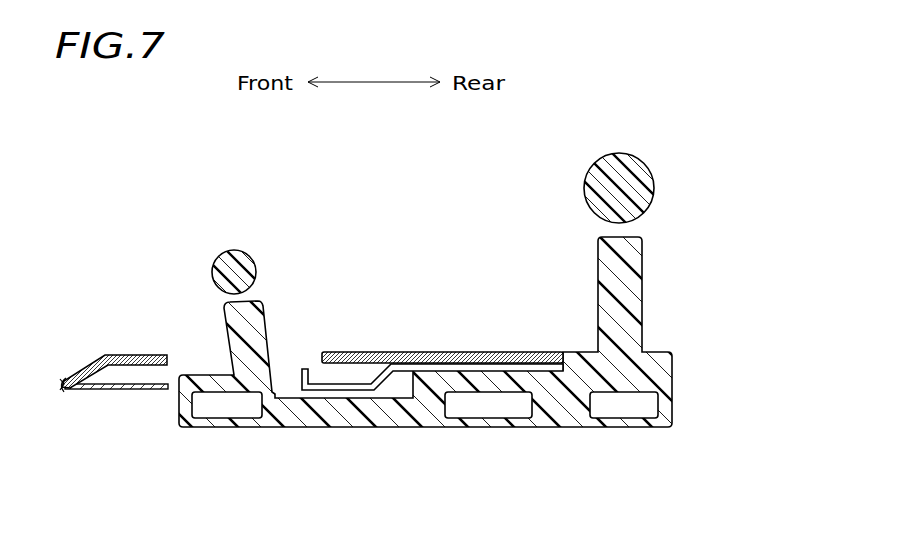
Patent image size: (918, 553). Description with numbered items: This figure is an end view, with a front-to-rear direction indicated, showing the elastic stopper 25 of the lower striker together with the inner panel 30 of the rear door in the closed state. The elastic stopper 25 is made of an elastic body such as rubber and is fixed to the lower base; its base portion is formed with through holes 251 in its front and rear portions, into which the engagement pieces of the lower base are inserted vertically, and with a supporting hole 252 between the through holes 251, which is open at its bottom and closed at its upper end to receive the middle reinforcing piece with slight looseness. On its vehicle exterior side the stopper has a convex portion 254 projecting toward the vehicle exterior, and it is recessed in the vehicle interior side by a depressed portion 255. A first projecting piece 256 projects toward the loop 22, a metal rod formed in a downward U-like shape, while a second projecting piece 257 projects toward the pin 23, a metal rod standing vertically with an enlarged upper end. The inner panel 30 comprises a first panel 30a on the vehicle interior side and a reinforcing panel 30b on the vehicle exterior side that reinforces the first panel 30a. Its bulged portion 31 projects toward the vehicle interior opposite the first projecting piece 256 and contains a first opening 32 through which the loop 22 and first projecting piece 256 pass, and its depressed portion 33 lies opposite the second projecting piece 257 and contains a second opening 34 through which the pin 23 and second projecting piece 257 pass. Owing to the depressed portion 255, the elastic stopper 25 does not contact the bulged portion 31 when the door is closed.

The loop 22 is at (228, 250).
The pin 23 is at (600, 156).
The elastic stopper 25 is at (684, 386).
The through hole 251 is at (230, 410).
The supporting hole 252 is at (491, 410).
The convex portion 254 is at (460, 352).
The depressed portion 255 is at (285, 392).
The first projecting piece 256 is at (226, 346).
The second projecting piece 257 is at (642, 273).
The inner panel 30 is at (122, 391).
The first panel 30a is at (70, 393).
The reinforcing panel 30b is at (132, 352).
The bulged portion 31 is at (333, 398).
The first opening 32 is at (305, 370).
The depressed portion 33 is at (428, 372).
The second opening 34 is at (573, 370).